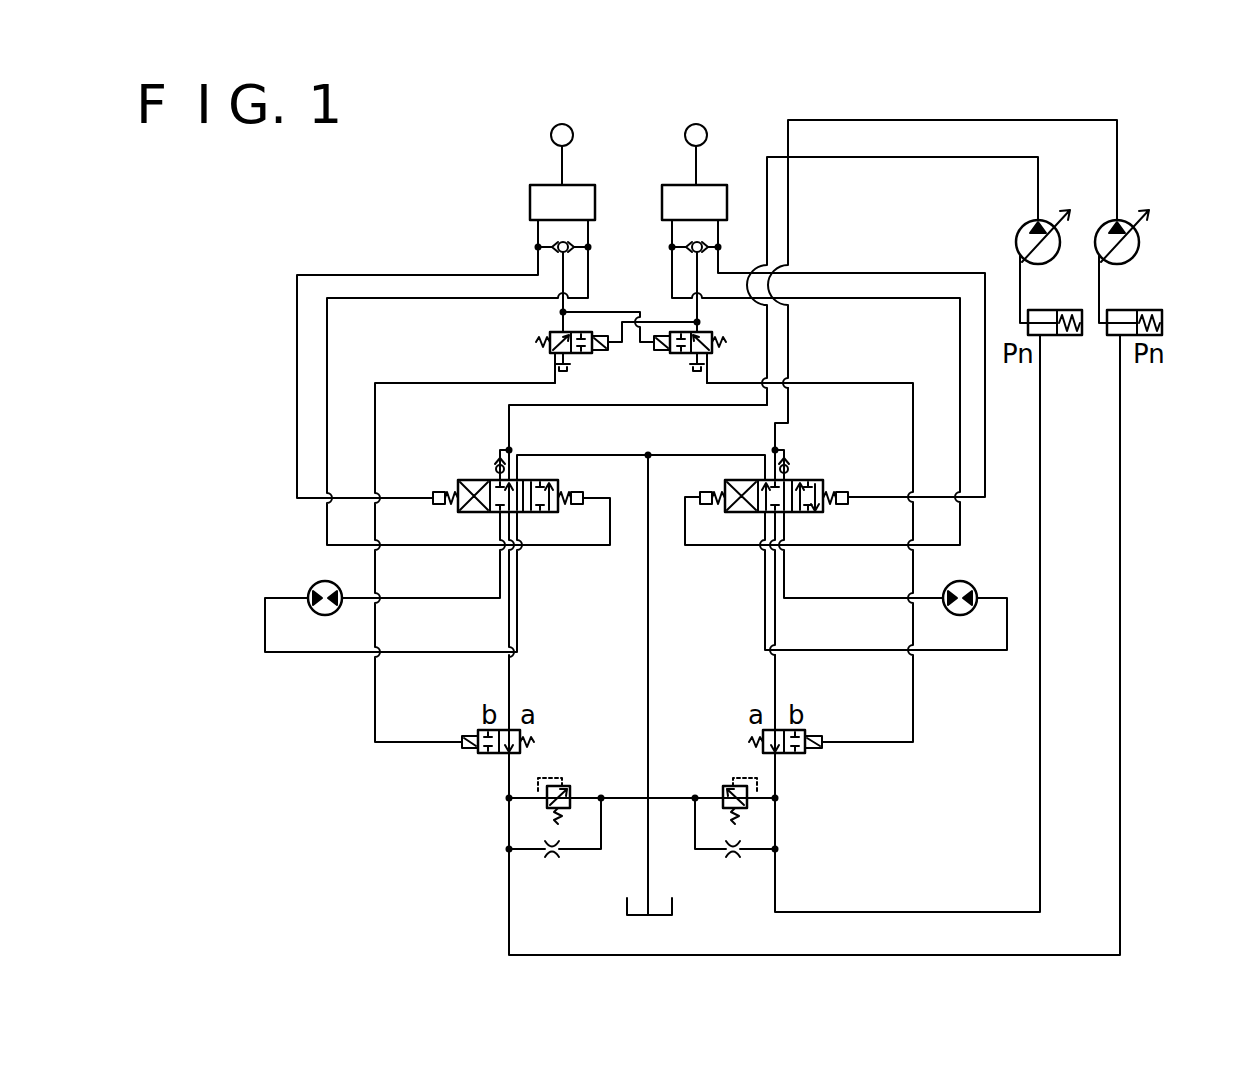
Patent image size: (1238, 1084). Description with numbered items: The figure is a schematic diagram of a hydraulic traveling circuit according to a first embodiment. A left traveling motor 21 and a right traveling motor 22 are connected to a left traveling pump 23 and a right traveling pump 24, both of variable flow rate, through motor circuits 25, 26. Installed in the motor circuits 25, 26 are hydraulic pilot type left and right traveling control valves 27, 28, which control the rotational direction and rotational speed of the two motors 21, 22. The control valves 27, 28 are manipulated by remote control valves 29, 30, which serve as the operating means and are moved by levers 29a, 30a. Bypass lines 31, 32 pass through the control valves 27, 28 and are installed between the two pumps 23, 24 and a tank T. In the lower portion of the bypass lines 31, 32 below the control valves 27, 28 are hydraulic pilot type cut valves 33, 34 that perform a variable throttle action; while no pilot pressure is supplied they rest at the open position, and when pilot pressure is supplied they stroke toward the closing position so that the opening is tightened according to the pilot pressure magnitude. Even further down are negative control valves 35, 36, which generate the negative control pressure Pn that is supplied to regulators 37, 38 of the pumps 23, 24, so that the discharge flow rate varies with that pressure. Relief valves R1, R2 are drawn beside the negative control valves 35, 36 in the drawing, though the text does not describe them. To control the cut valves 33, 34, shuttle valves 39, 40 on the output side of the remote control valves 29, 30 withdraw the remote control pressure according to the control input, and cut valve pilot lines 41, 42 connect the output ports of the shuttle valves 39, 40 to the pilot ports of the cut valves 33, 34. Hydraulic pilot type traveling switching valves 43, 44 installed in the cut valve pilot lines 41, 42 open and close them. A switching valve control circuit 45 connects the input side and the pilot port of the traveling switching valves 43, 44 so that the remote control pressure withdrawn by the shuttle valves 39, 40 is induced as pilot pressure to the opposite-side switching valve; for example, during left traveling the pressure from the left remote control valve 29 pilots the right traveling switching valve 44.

The left traveling motor 21 is at (316, 584).
The right traveling motor 22 is at (973, 584).
The left traveling pump 23 is at (1016, 244).
The right traveling pump 24 is at (1140, 243).
The motor circuit 25 is at (498, 414).
The motor circuit 26 is at (799, 417).
The left traveling control valve 27 is at (463, 478).
The right traveling control valve 28 is at (820, 478).
The remote control valve 29 is at (530, 203).
The lever 29a is at (558, 165).
The remote control valve 30 is at (662, 202).
The lever 30a is at (695, 165).
The bypass line 31 is at (515, 680).
The bypass line 32 is at (770, 680).
The cut valve 33 is at (493, 755).
The cut valve 34 is at (800, 755).
The negative control valve 35 is at (555, 858).
The negative control valve 36 is at (733, 858).
The regulator 37 is at (1064, 337).
The regulator 38 is at (1163, 323).
The shuttle valve 39 is at (538, 251).
The shuttle valve 40 is at (672, 250).
The cut valve pilot line 41 is at (373, 692).
The cut valve pilot line 42 is at (913, 692).
The traveling switching valve 43 is at (548, 338).
The traveling switching valve 44 is at (688, 356).
The switching valve control circuit 45 is at (633, 339).
The relief valve R1 is at (565, 786).
The relief valve R2 is at (727, 786).
The tank T is at (632, 918).